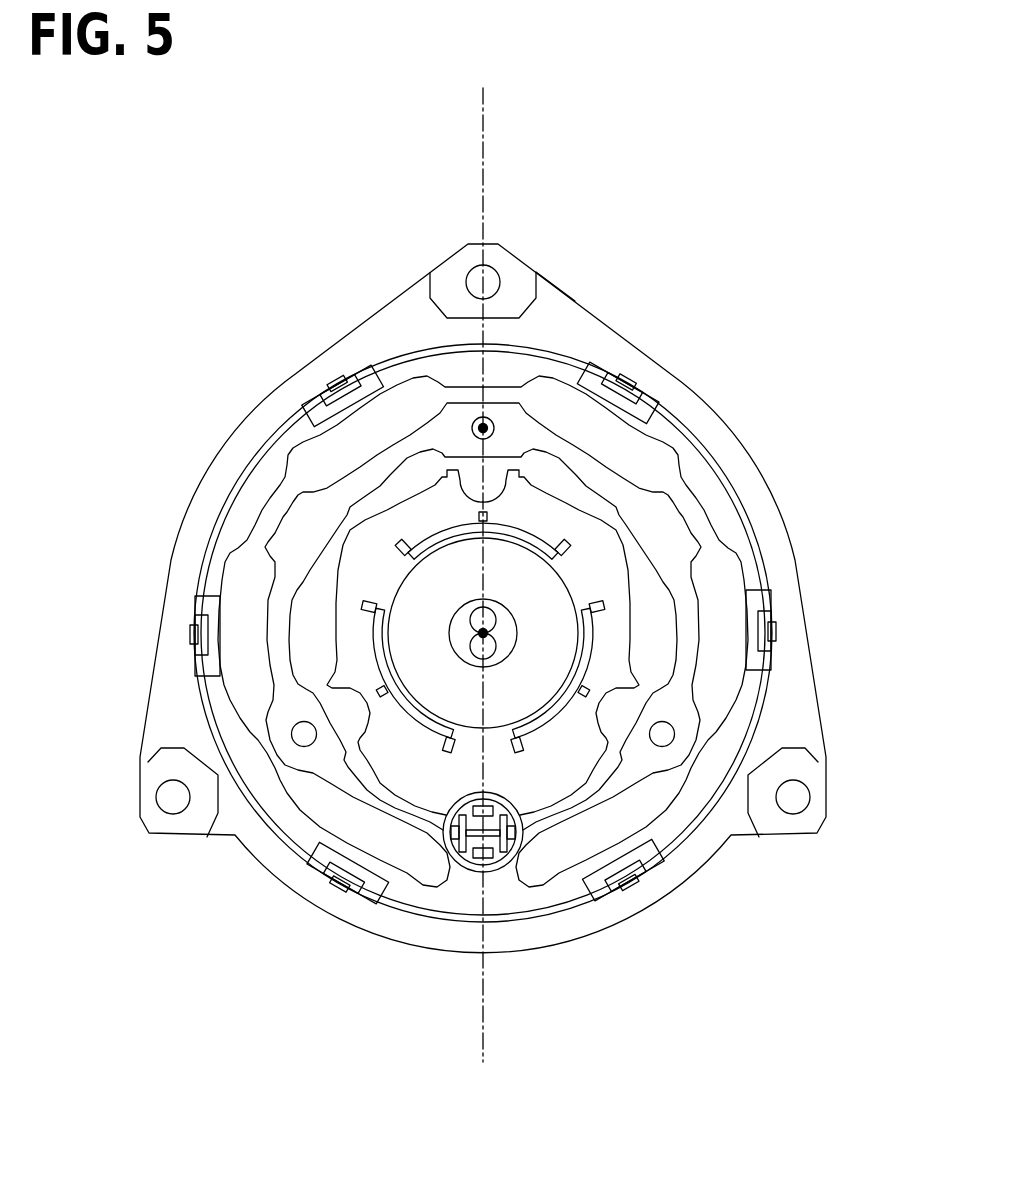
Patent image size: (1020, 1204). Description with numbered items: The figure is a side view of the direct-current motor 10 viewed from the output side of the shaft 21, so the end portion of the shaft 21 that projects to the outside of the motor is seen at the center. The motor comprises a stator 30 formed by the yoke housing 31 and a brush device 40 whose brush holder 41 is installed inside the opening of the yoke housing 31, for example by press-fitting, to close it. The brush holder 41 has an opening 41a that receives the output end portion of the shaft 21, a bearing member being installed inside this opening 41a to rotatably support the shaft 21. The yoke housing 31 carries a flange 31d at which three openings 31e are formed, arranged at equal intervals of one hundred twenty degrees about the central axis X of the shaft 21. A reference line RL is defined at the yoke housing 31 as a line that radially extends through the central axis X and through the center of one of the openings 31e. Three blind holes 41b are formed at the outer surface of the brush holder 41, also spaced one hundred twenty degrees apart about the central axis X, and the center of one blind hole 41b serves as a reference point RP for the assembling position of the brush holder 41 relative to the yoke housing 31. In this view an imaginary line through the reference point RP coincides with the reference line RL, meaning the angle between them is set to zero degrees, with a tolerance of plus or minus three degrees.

The direct-current motor 10 is at (801, 317).
The shaft 21 is at (478, 633).
The stator 30 is at (298, 372).
The yoke housing 31 is at (786, 510).
The flange 31d is at (575, 301).
The openings 31e is at (468, 272).
The brush device 40 is at (294, 845).
The brush holder 41 is at (666, 856).
The opening 41a is at (500, 634).
The blind holes 41b is at (493, 420).
The reference point RP is at (471, 430).
The central axis X is at (490, 628).
The reference line RL is at (486, 150).